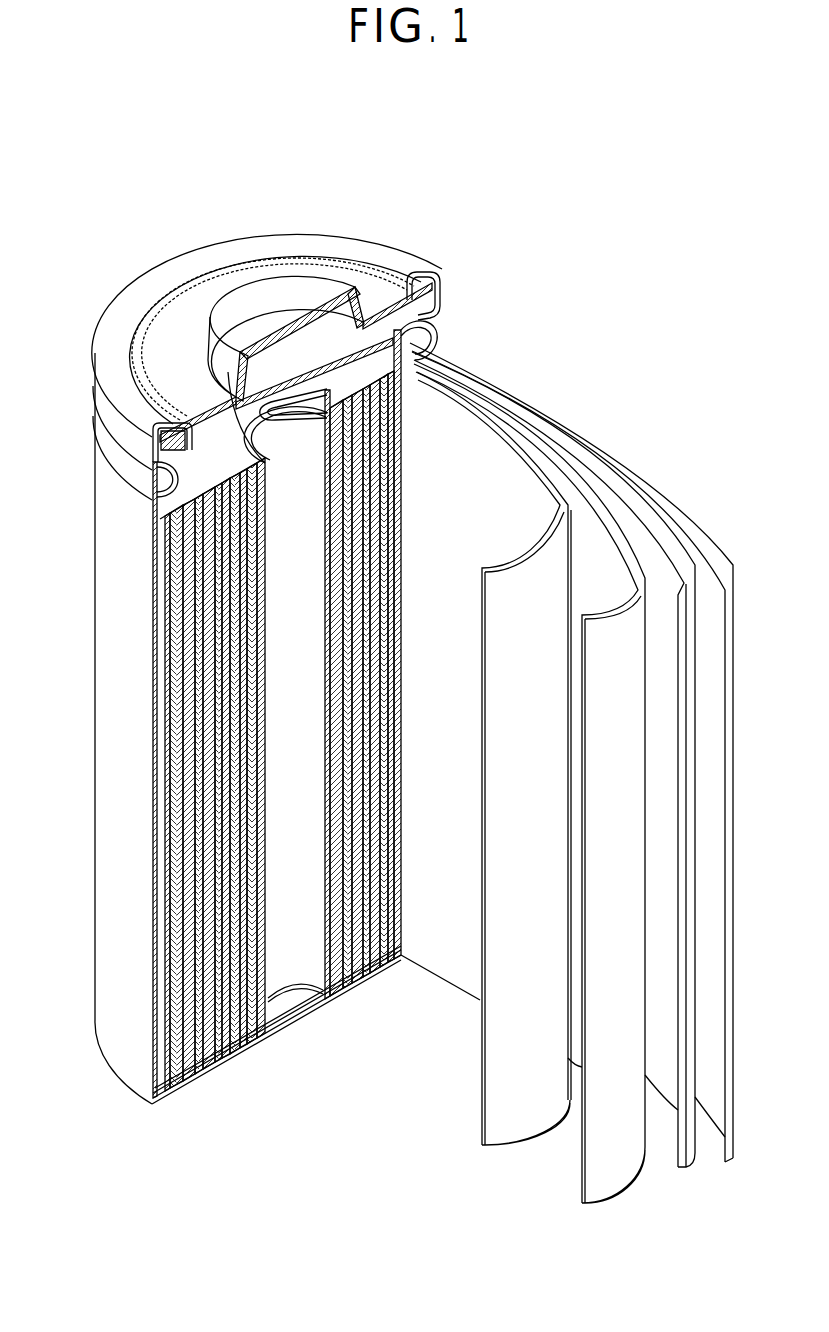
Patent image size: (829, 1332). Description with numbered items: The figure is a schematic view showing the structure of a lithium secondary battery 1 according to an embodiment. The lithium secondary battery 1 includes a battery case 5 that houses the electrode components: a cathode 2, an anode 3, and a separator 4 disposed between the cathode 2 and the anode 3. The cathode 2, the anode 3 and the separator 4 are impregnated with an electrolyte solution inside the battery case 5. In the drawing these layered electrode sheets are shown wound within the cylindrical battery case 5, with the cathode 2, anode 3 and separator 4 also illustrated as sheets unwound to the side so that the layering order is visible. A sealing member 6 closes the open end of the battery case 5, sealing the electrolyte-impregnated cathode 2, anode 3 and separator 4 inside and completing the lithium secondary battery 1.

The lithium secondary battery 1 is at (276, 144).
The cathode 2 is at (733, 653).
The anode 3 is at (623, 608).
The separator 4 is at (684, 542).
The battery case 5 is at (112, 982).
The sealing member 6 is at (253, 297).